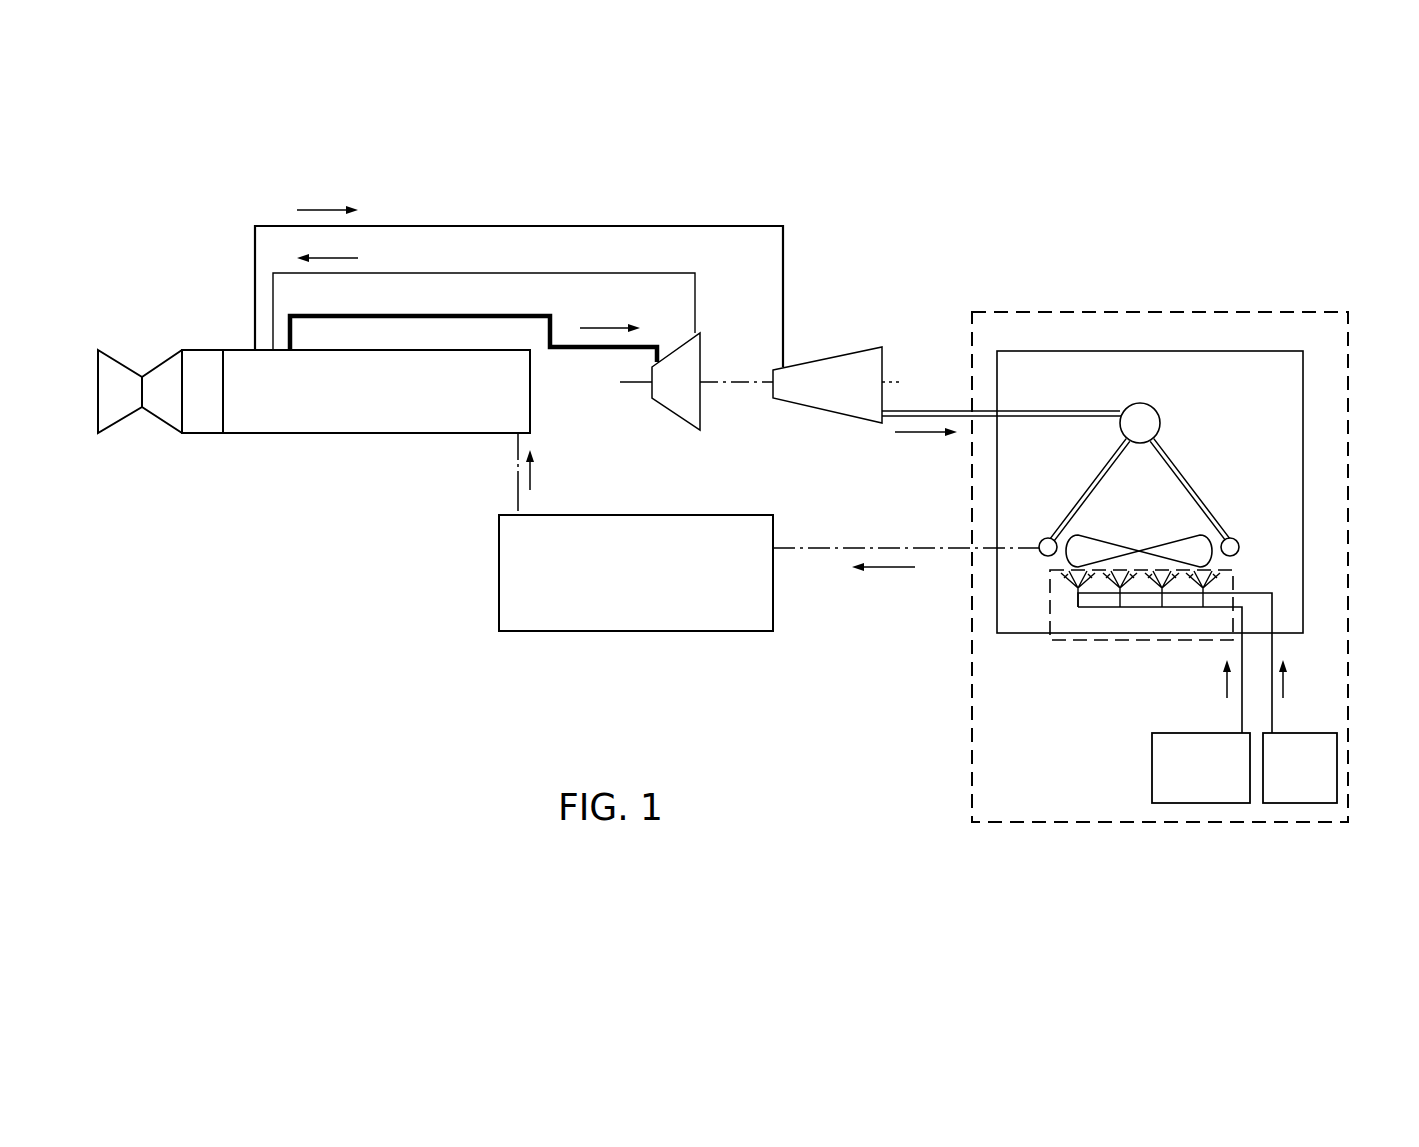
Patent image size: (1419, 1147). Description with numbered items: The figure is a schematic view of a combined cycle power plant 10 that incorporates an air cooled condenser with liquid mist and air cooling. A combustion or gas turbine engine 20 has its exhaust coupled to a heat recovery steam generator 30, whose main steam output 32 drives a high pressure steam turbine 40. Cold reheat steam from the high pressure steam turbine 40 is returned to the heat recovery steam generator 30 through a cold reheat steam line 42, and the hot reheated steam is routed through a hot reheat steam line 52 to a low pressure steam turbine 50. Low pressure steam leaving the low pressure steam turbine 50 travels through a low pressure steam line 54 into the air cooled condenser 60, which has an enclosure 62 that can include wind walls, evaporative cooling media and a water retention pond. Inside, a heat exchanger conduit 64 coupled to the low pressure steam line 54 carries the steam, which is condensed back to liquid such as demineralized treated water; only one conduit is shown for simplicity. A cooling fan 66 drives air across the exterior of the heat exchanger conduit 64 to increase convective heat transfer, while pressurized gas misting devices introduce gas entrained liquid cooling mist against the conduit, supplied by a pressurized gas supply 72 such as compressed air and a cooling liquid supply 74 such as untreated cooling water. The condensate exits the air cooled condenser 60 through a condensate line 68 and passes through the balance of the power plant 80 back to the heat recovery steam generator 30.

The power plant 10 is at (268, 598).
The gas turbine engine 20 is at (141, 345).
The heat recovery steam generator 30 is at (272, 465).
The main steam output 32 is at (580, 348).
The high pressure steam turbine 40 is at (686, 442).
The cold reheat steam line 42 is at (697, 285).
The low pressure steam turbine 50 is at (800, 324).
The hot reheat steam line 52 is at (755, 227).
The low pressure steam line 54 is at (890, 405).
The air cooled condenser 60 is at (972, 778).
The enclosure 62 is at (1305, 387).
The heat exchanger conduit 64 is at (1213, 510).
The cooling fan 66 is at (1125, 542).
The condensate line 68 is at (518, 498).
The pressurized gas supply 72 is at (1298, 805).
The cooling liquid supply 74 is at (1188, 805).
The balance of the power plant 80 is at (596, 654).